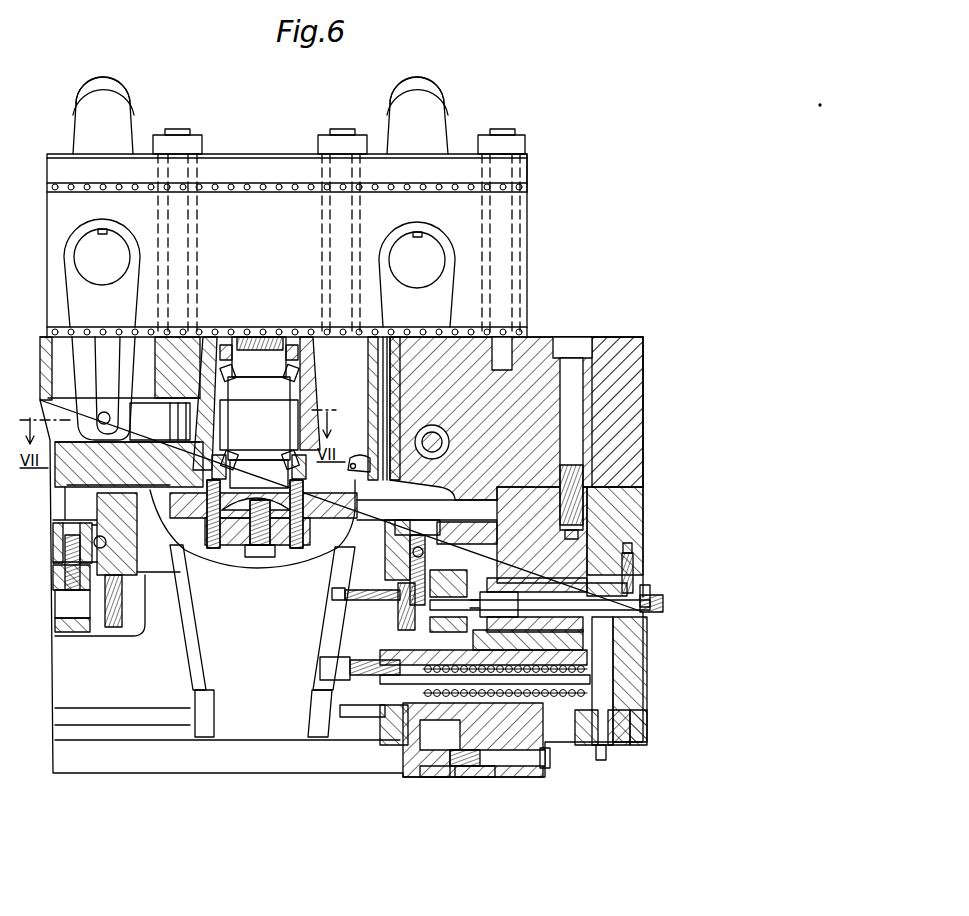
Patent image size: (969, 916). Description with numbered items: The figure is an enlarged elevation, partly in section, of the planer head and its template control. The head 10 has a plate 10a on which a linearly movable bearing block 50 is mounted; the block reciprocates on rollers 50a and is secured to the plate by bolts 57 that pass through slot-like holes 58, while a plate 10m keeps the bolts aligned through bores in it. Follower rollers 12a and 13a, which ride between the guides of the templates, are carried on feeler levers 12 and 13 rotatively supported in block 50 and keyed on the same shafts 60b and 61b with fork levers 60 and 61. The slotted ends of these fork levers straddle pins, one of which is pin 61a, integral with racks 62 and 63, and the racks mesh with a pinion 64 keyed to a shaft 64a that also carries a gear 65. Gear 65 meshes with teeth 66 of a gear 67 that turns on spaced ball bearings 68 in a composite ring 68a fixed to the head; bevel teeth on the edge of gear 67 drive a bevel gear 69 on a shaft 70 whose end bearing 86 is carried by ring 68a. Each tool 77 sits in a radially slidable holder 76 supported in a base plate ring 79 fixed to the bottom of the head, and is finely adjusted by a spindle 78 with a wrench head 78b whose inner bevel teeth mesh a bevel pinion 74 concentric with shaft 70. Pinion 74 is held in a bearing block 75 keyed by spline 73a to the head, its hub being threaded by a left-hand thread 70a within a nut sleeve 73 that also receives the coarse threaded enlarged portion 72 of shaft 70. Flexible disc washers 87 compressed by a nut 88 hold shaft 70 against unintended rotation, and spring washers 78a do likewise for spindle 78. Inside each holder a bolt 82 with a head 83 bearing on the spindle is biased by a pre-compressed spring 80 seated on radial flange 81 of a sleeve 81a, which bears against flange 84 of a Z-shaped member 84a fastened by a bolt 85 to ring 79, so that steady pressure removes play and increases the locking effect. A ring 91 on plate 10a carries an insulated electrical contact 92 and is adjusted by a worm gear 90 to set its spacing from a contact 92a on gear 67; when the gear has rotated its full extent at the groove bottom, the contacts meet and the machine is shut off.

The head 10 is at (625, 506).
The plate 10a is at (612, 338).
The plate 10m is at (520, 162).
The feeler lever 12 is at (420, 128).
The follower roller 12a is at (447, 94).
The feeler lever 13 is at (108, 124).
The follower roller 13a is at (131, 94).
The bearing block 50 is at (529, 275).
The rollers 50a is at (500, 330).
The bolts 57 is at (515, 180).
The slot-like holes 58 is at (520, 250).
The fork lever 60 is at (470, 214).
The shaft 60b is at (417, 260).
The fork lever 61 is at (140, 248).
The pin 61a is at (104, 412).
The shaft 61b is at (102, 257).
The rack 62 is at (162, 431).
The rack 63 is at (93, 405).
The pinion 64 is at (256, 408).
The shaft 64a is at (298, 425).
The gear 65 is at (352, 520).
The teeth 66 is at (405, 525).
The gear 67 is at (340, 590).
The ball bearings 68 is at (408, 548).
The composite ring 68a is at (467, 527).
The bevel gear 69 is at (345, 606).
The shaft 70 is at (440, 600).
The left-hand thread 70a is at (545, 590).
The coarse threaded enlarged portion 72 is at (537, 589).
The nut sleeve 73 is at (590, 650).
The spline 73a is at (610, 584).
The bevel pinion 74 is at (598, 624).
The bearing block 75 is at (605, 690).
The tool holder 76 is at (312, 718).
The tool 77 is at (305, 703).
The spindle 78 is at (600, 748).
The spring washers 78a is at (614, 745).
The head 78b is at (603, 762).
The base plate ring 79 is at (385, 732).
The spring 80 is at (440, 750).
The radial flange 81 is at (405, 742).
The sleeve 81a is at (420, 770).
The bolt 82 is at (480, 768).
The head 83 is at (585, 740).
The radial flange 84 is at (385, 745).
The Z-shaped member 84a is at (460, 770).
The bolt 85 is at (510, 768).
The end bearing 86 is at (634, 550).
The flexible disc washers 87 is at (646, 588).
The nut 88 is at (652, 598).
The worm gear 90 is at (414, 428).
The ring 91 is at (372, 372).
The electrical contact 92 is at (360, 458).
The contact 92a is at (340, 530).